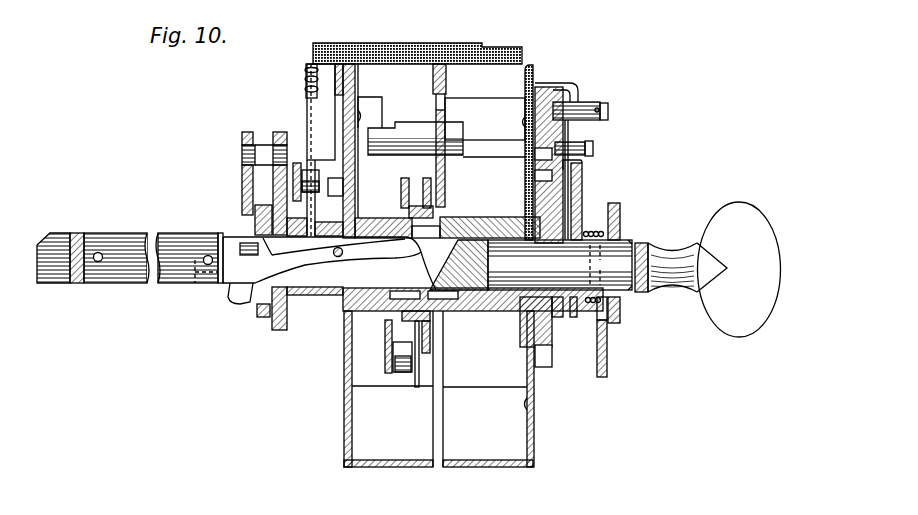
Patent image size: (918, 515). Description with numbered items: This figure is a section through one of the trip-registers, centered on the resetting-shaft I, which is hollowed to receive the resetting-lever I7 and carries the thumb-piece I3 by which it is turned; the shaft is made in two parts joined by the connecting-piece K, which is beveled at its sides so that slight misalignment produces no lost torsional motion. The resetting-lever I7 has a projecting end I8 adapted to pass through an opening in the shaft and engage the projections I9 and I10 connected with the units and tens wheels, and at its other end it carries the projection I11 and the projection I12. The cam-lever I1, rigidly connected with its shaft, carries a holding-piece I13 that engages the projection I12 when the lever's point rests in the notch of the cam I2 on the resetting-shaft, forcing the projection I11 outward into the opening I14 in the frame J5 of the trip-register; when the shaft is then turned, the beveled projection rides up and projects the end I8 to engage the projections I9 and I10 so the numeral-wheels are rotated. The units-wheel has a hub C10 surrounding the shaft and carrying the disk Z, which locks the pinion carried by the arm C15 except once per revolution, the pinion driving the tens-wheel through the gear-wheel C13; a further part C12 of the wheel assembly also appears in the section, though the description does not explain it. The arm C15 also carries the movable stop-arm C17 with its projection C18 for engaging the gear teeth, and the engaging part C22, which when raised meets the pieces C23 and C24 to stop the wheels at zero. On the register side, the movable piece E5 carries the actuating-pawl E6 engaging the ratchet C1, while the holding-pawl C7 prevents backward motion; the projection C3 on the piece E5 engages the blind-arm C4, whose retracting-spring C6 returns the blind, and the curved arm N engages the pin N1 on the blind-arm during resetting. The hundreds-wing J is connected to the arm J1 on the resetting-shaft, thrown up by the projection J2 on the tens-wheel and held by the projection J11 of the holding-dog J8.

The projection C3 is at (478, 47).
The housing web C12 is at (375, 228).
The gear-wheel C13 is at (401, 195).
The hub or central part C10 is at (478, 232).
The arm C15 is at (446, 169).
The piece C24 is at (372, 100).
The engaging part C22 is at (405, 128).
The piece C23 is at (502, 108).
The hundreds-wing J is at (313, 60).
The arm J1 is at (295, 200).
The projection J11 is at (308, 188).
The projection J2 is at (333, 178).
The holding-piece or holding-dog J8 is at (285, 160).
The holding-piece I13 is at (243, 178).
The cam-lever I1 is at (278, 133).
The connecting-piece K is at (168, 279).
The resetting-lever I7 is at (355, 258).
The projection I11 is at (248, 241).
The projection I12 is at (232, 300).
The cam I2 is at (279, 332).
The opening I14 is at (259, 299).
The frame J5 is at (263, 319).
The projecting end I8 is at (478, 300).
The projection I10 is at (447, 302).
The projection I9 is at (417, 365).
The disk Z is at (430, 349).
The movable arm or stop-arm C17 is at (385, 345).
The projection C18 is at (400, 373).
The ratchet C1 is at (543, 368).
The movable piece E5 is at (565, 320).
The curved or bent arm N is at (607, 360).
The actuating-pawl E6 is at (548, 85).
The holding-pawl C7 is at (581, 148).
The blind-arm C4 is at (579, 195).
The retracting-spring C6 is at (611, 210).
The trip-register shaft or resetting-shaft I is at (648, 297).
The pin N1 is at (640, 240).
The thumb-piece I3 is at (742, 333).